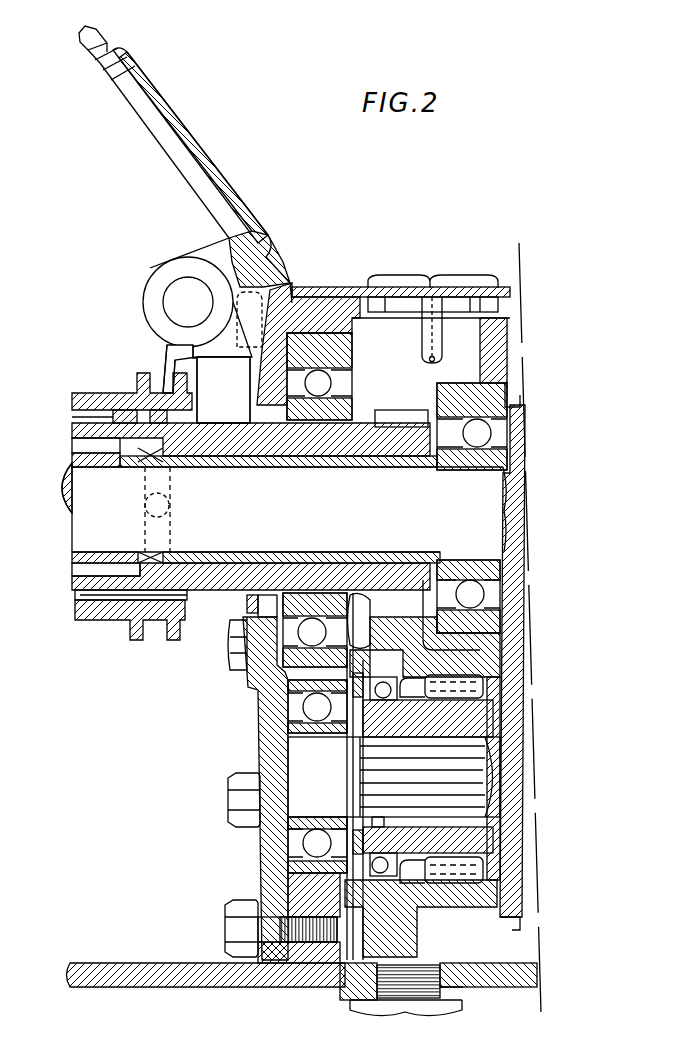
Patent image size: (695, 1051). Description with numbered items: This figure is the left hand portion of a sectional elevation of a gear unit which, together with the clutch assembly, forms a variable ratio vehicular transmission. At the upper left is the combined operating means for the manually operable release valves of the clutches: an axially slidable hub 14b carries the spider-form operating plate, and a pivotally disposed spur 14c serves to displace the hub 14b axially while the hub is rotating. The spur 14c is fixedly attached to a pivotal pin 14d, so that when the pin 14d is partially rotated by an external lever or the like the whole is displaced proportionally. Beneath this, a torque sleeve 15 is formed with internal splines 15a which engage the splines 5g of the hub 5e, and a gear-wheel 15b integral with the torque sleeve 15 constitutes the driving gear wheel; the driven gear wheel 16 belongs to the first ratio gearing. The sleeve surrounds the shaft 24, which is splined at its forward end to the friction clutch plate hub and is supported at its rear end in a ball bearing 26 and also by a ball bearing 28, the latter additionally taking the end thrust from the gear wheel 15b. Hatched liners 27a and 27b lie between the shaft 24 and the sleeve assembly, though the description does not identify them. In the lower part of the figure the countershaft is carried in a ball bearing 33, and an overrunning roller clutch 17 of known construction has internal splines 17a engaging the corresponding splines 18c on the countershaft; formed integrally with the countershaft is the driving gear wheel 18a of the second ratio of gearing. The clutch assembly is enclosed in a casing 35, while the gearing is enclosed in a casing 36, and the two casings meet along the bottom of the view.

The pivotal pin 14d is at (183, 300).
The spur 14c is at (178, 355).
The axially slidable hub 14b is at (120, 392).
The torque sleeve 15 is at (82, 425).
The internal splines 15a is at (82, 443).
The gear-wheel 15b is at (393, 413).
The hub 5e is at (70, 460).
The splines 5g is at (113, 467).
The shaft 24 is at (92, 530).
The bushing 27a is at (245, 438).
The bushing 27b is at (330, 470).
The ball bearing 28 is at (291, 355).
The ball bearing 26 is at (455, 400).
The ball bearing 33 is at (270, 727).
The splines 18c is at (375, 792).
The internal splines 17a is at (385, 822).
The overrunning roller clutch 17 is at (448, 858).
The driving gear wheel 18a is at (515, 918).
The casing 35 is at (165, 975).
The casing 36 is at (345, 975).
The driven gear wheel 16 is at (385, 948).